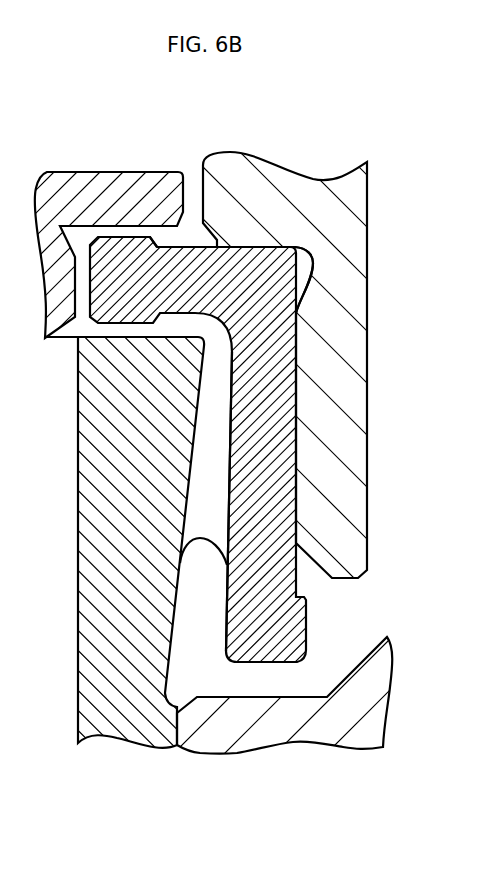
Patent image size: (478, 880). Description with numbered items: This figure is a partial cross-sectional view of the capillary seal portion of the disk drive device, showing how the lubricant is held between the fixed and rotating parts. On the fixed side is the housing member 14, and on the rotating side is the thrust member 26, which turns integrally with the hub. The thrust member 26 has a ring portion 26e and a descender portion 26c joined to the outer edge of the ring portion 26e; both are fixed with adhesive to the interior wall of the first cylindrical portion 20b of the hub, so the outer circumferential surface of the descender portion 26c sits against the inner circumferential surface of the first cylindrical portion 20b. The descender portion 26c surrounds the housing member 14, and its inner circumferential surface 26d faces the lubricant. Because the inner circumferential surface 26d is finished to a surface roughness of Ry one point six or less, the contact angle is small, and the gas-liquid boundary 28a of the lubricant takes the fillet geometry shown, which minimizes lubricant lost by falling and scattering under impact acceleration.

The housing member 14 is at (122, 735).
The first cylindrical portion 20b is at (350, 457).
The thrust member 26 is at (252, 270).
The descender portion 26c is at (277, 393).
The inner circumferential surface 26d is at (212, 527).
The ring portion 26e is at (125, 257).
The gas-liquid boundary 28a is at (200, 540).